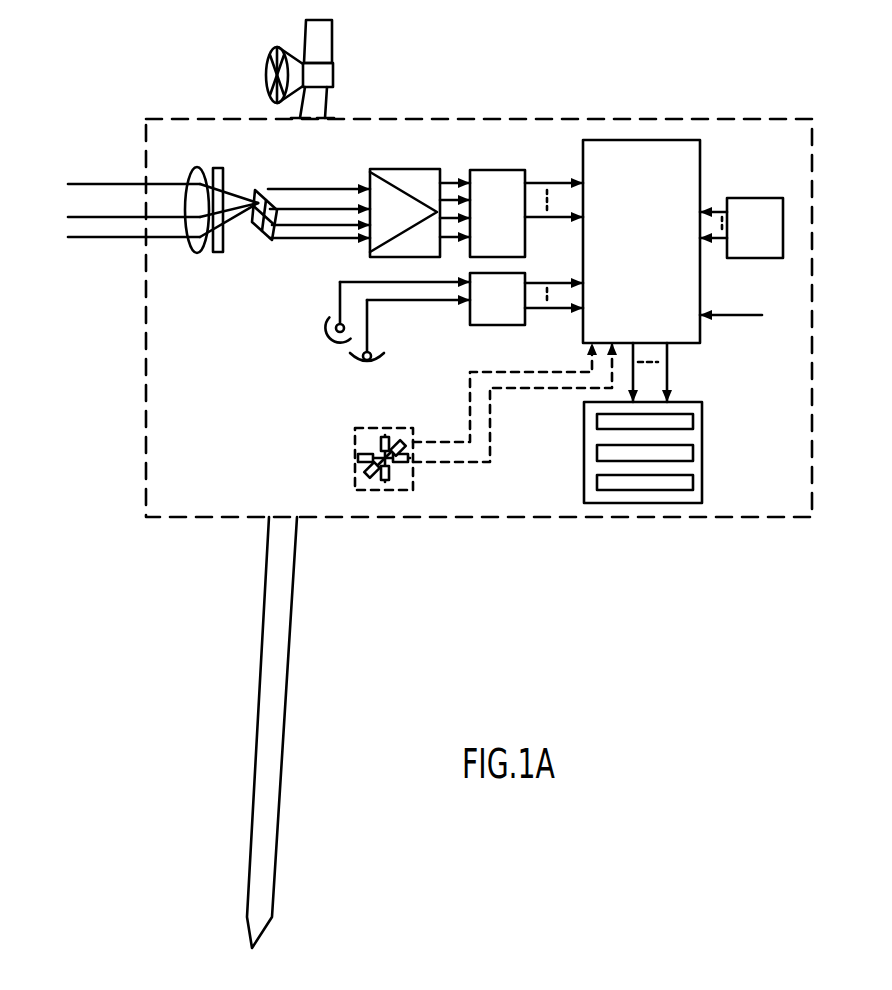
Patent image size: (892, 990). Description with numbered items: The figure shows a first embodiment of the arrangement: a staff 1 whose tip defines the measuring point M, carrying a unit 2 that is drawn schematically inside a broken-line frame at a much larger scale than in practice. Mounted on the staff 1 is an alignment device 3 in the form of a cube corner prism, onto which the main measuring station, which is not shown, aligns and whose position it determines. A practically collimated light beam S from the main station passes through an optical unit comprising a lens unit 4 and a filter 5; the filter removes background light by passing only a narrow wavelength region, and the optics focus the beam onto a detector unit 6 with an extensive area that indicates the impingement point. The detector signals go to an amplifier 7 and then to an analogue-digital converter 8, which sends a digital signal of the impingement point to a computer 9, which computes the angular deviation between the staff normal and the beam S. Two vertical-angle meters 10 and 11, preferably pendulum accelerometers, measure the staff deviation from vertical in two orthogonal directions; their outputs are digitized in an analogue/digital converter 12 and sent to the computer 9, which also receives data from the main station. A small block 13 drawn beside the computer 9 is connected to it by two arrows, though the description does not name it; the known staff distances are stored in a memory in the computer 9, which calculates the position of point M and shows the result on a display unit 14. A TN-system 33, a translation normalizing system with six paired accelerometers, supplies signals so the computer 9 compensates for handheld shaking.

The staff 1 is at (285, 607).
The unit 2 is at (783, 162).
The alignment device 3 is at (295, 52).
The lens unit 4 is at (197, 253).
The filter 5 is at (220, 252).
The detector unit 6 is at (268, 242).
The amplifier 7 is at (398, 169).
The analogue-digital converter 8 is at (492, 170).
The computer 9 is at (700, 157).
The vertical-angle meter 10 is at (338, 298).
The vertical-angle meter 11 is at (368, 330).
The analogue/digital converter 12 is at (527, 326).
The memory 13 is at (752, 259).
The display unit 14 is at (702, 421).
The TN-system 33 is at (362, 426).
The light beam S is at (100, 238).